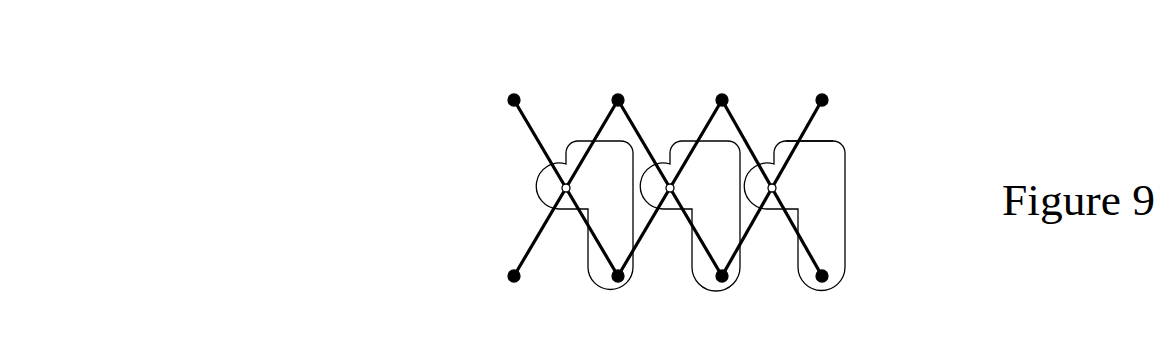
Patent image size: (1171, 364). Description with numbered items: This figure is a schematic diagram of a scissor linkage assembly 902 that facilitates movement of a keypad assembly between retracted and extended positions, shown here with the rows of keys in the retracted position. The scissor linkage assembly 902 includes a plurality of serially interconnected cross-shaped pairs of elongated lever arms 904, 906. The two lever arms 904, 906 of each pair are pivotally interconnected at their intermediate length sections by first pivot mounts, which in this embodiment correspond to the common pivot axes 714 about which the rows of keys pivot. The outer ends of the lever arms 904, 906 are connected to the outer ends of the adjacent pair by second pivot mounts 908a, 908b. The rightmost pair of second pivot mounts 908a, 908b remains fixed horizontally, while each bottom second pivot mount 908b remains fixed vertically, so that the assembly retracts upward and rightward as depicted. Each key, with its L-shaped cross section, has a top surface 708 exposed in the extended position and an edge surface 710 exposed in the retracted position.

The scissor linkage assembly 902 is at (497, 77).
The elongated lever arm 904 is at (757, 240).
The elongated lever arm 906 is at (738, 118).
The second pivot mount 908a is at (619, 93).
The second pivot mount 908b is at (613, 284).
The top surface of the key 708 is at (847, 198).
The edge surface of the key 710 is at (827, 140).
The common pivot axis 714 is at (559, 189).